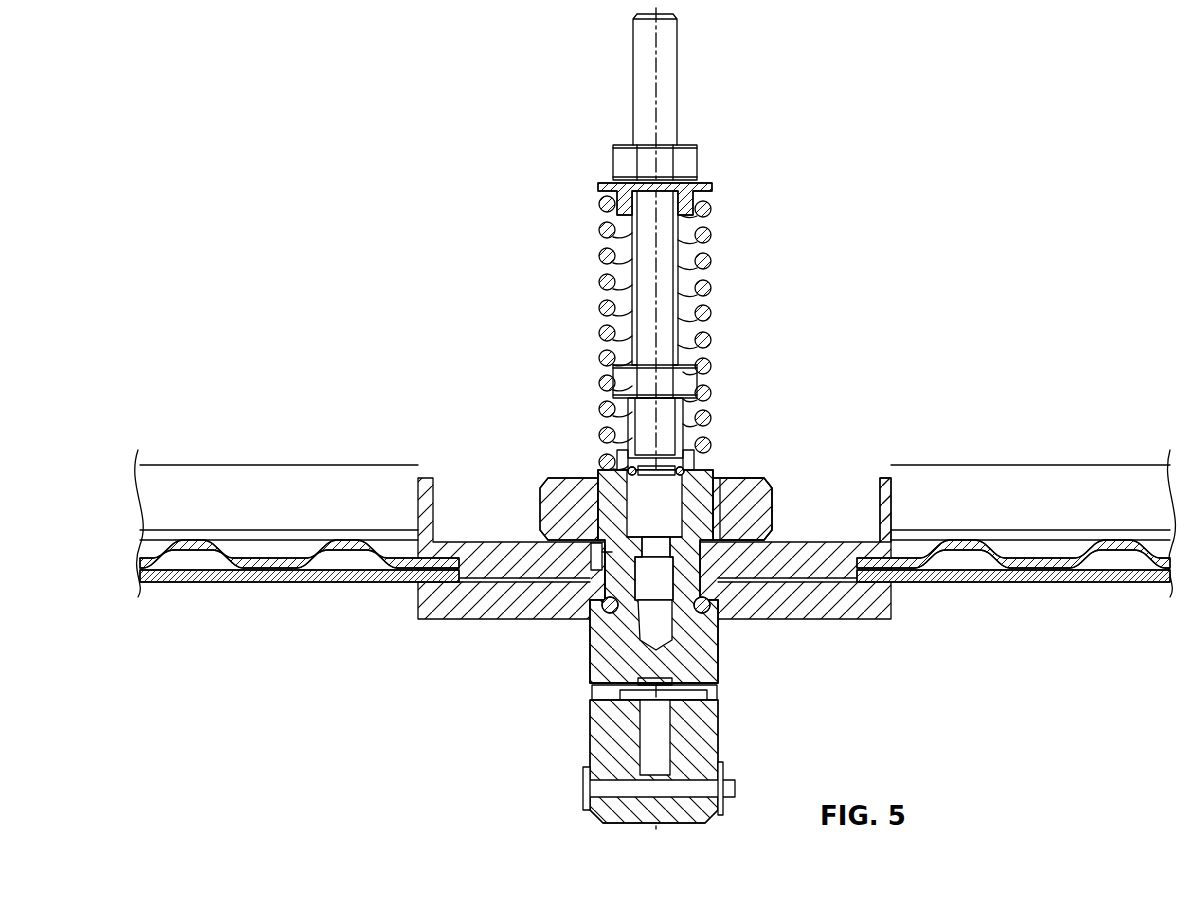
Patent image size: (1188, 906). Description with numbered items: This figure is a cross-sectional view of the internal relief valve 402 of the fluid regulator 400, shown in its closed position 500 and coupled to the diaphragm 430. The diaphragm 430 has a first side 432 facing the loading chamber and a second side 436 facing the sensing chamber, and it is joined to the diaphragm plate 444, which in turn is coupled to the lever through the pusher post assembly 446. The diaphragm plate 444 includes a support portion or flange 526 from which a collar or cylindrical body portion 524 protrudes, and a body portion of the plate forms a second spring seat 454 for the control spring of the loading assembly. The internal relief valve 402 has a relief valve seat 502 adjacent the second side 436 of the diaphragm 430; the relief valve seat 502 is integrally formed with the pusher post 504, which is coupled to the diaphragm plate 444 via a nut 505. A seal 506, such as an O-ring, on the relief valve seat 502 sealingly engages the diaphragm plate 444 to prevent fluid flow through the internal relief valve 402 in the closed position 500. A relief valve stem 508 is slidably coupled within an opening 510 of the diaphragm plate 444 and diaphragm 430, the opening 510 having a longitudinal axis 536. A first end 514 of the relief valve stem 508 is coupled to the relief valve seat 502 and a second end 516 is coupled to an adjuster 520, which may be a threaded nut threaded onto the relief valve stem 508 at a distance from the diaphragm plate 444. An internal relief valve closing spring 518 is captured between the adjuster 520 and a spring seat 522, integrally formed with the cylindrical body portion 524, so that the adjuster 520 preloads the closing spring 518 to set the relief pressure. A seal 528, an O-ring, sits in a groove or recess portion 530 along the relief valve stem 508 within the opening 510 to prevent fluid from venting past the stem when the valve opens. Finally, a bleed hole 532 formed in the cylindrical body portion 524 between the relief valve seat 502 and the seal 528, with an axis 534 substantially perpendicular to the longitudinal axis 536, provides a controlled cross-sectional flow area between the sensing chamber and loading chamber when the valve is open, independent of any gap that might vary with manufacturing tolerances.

The fluid regulator 400 is at (262, 70).
The internal relief valve 402 is at (535, 668).
The diaphragm 430 is at (1050, 465).
The first side 432 is at (232, 465).
The second side 436 is at (215, 582).
The diaphragm plate 444 is at (866, 620).
The pusher post assembly 446 is at (858, 735).
The second spring seat 454 is at (890, 507).
The closed position 500 is at (345, 188).
The relief valve seat 502 is at (700, 617).
The pusher post 504 is at (718, 730).
The nut 505 is at (767, 502).
The seal 506 is at (670, 628).
The relief valve stem 508 is at (667, 255).
The opening 510 is at (685, 517).
The first end 514 is at (718, 690).
The second end 516 is at (631, 48).
The internal relief valve closing spring 518 is at (600, 278).
The adjuster 520 is at (598, 186).
The spring seat 522 is at (663, 468).
The cylindrical body portion 524 is at (752, 494).
The flange 526 is at (891, 598).
The seal 528 is at (607, 462).
The recess portion 530 is at (697, 385).
The bleed hole 532 is at (602, 548).
The axis 534 is at (600, 607).
The longitudinal axis 536 is at (655, 91).